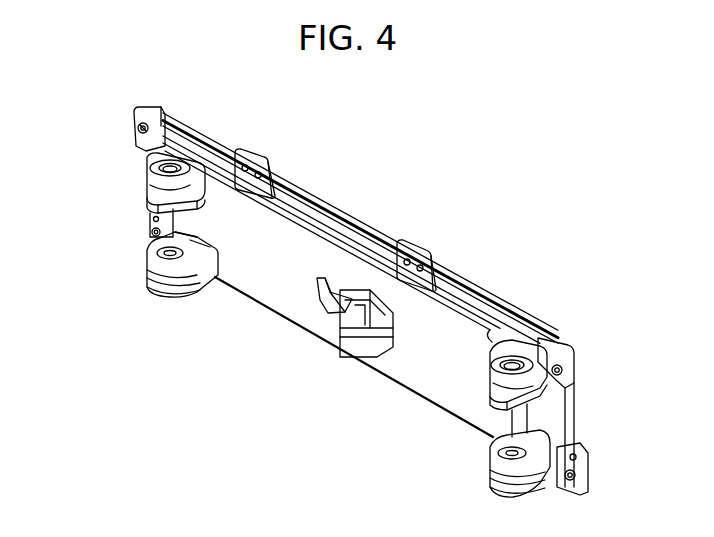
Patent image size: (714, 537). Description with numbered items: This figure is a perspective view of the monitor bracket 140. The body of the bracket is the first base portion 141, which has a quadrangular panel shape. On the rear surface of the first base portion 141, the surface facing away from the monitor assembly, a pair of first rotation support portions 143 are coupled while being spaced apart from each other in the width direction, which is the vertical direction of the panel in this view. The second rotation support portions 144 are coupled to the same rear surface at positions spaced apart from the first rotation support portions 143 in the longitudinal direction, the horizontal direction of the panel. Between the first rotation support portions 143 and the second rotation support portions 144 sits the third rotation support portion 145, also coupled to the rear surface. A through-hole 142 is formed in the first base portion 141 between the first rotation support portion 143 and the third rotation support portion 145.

The monitor bracket 140 is at (554, 150).
The first base portion 141 is at (328, 205).
The through-hole 142 is at (333, 296).
The first rotation support portion 143 is at (148, 175).
The second rotation support portion 144 is at (490, 370).
The third rotation support portion 145 is at (347, 348).